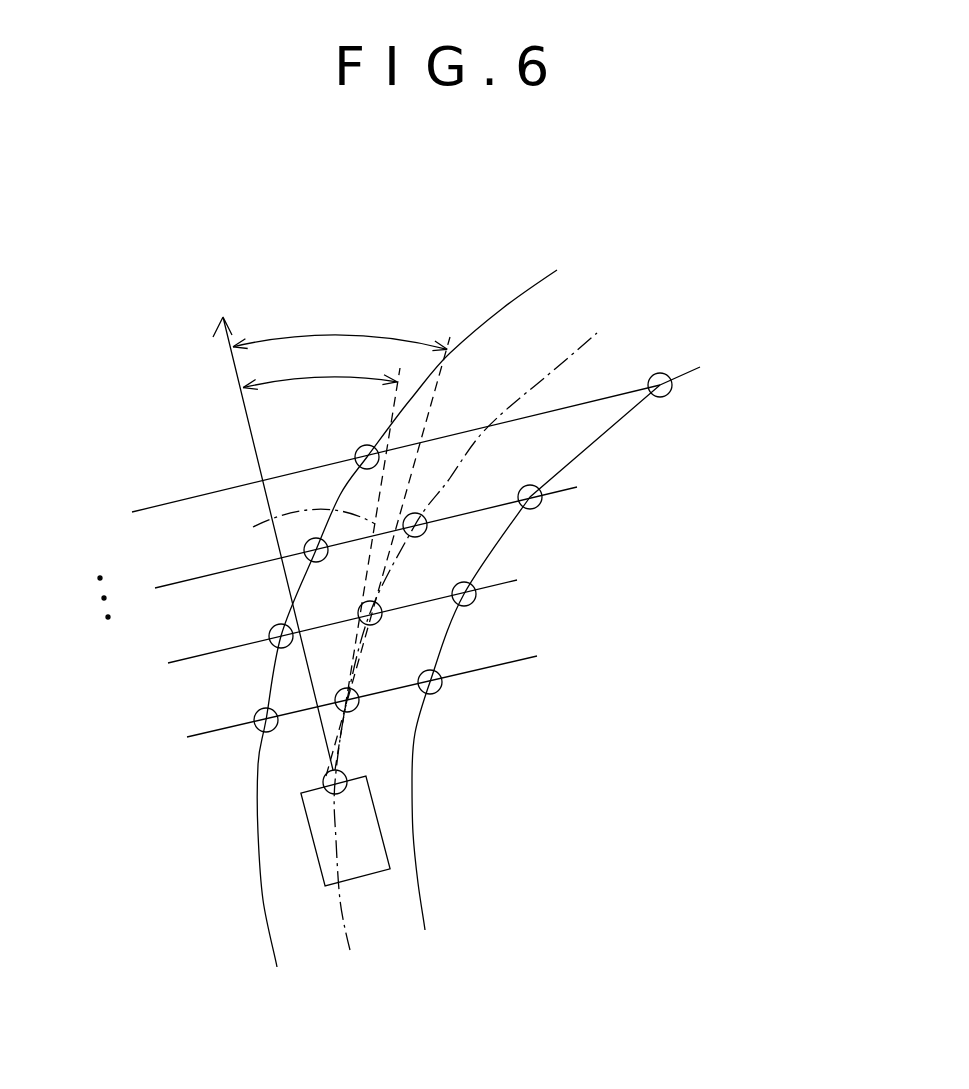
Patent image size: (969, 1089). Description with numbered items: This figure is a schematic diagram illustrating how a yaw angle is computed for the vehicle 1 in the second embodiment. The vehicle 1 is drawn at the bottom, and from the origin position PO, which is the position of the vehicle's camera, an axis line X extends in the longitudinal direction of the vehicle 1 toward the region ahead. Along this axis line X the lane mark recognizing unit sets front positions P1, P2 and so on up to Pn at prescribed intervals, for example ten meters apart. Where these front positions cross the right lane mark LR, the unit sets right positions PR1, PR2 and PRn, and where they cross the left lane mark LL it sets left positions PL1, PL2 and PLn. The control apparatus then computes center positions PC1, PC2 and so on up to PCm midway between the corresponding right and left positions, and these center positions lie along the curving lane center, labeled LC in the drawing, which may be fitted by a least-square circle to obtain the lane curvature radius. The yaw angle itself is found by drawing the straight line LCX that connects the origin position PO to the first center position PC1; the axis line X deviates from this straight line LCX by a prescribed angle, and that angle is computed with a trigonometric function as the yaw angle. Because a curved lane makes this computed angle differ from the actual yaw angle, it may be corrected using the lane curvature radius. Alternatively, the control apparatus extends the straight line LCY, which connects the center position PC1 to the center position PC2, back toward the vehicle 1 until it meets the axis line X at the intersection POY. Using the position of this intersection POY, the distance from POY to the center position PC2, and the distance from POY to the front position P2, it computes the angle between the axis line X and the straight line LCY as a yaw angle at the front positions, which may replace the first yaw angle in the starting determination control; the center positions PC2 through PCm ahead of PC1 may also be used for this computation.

The vehicle 1 is at (382, 817).
The left lane mark LL is at (460, 345).
The right lane mark LR is at (680, 377).
The lane center line LC is at (572, 350).
The straight line LCY is at (433, 410).
The straight line LCX is at (256, 527).
The axis line X is at (240, 384).
The front position Pn is at (132, 512).
The front position P2 is at (168, 663).
The front position P1 is at (187, 737).
The left position PLn is at (357, 447).
The right position PRn is at (672, 396).
The center position PCm is at (428, 510).
The left position PL2 is at (270, 628).
The center position PC2 is at (385, 598).
The right position PR2 is at (477, 598).
The left position PL1 is at (256, 712).
The center position PC1 is at (367, 685).
The right position PR1 is at (443, 685).
The origin position PO is at (337, 768).
The intersection POY is at (323, 758).